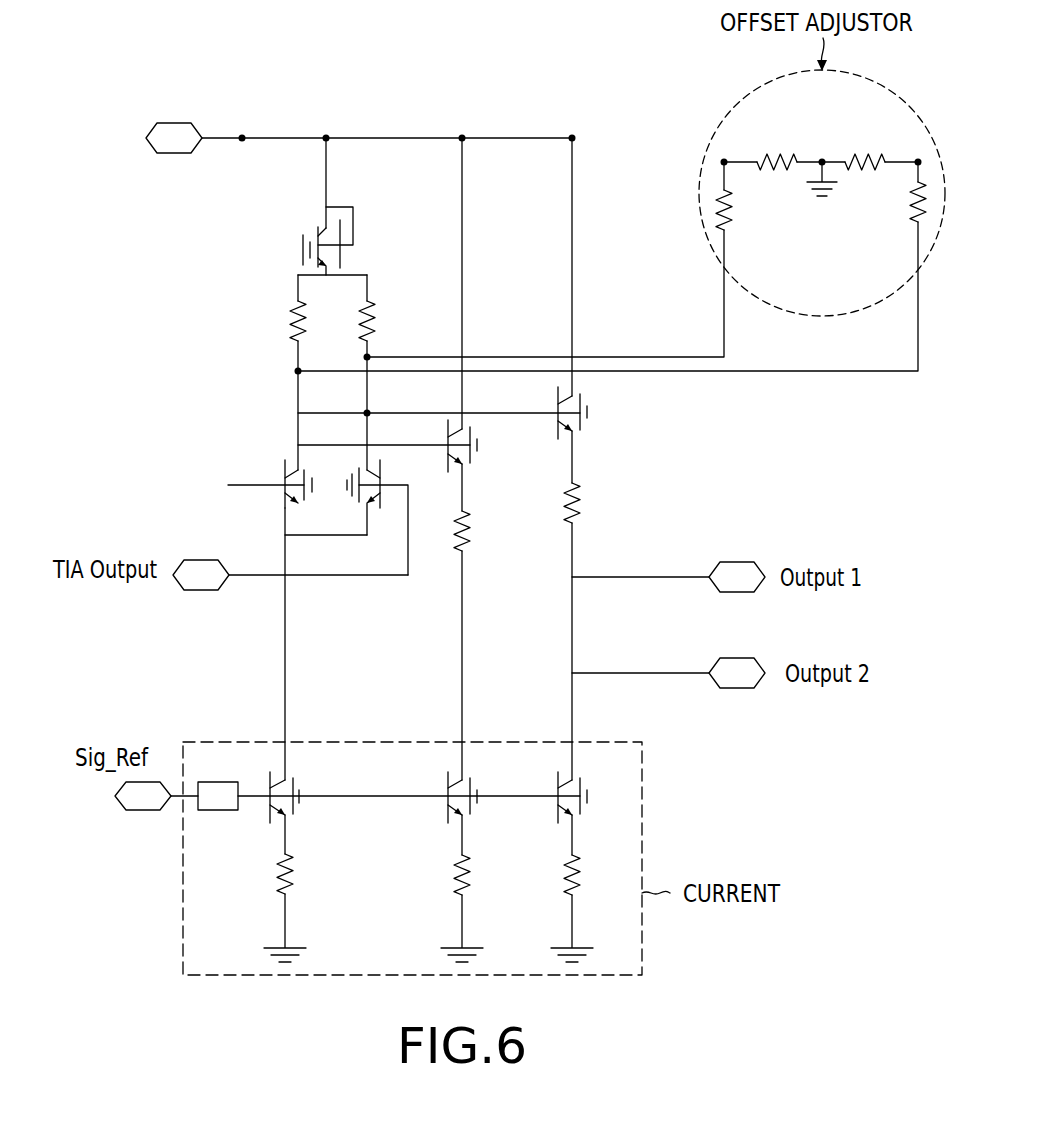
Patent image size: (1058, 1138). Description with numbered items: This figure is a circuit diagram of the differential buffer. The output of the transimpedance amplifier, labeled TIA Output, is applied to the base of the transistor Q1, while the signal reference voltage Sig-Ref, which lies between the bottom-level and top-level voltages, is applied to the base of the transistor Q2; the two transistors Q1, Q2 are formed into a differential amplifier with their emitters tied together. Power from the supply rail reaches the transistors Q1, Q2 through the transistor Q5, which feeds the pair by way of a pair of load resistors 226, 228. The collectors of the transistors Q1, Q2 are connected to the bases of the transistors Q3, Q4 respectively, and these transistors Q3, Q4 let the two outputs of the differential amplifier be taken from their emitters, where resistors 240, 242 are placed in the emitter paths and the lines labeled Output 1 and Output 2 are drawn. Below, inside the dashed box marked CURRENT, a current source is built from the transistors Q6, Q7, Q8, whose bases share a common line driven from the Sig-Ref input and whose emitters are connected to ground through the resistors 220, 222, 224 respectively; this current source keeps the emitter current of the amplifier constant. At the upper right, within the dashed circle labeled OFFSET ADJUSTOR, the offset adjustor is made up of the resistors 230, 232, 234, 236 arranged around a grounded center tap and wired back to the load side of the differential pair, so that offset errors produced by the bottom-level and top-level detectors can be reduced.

The resistor 220 is at (307, 874).
The resistor 222 is at (484, 875).
The resistor 224 is at (594, 875).
The resistor 226 is at (277, 321).
The resistor 228 is at (389, 321).
The resistor 230 is at (742, 208).
The resistor 232 is at (773, 151).
The resistor 234 is at (907, 210).
The resistor 236 is at (862, 151).
The resistor 240 is at (484, 531).
The resistor 242 is at (595, 503).
The transistor Q1 is at (280, 496).
The transistor Q2 is at (377, 517).
The transistor Q3 is at (475, 455).
The transistor Q4 is at (584, 424).
The transistor Q5 is at (346, 241).
The transistor Q6 is at (296, 786).
The transistor Q7 is at (472, 786).
The transistor Q8 is at (585, 786).